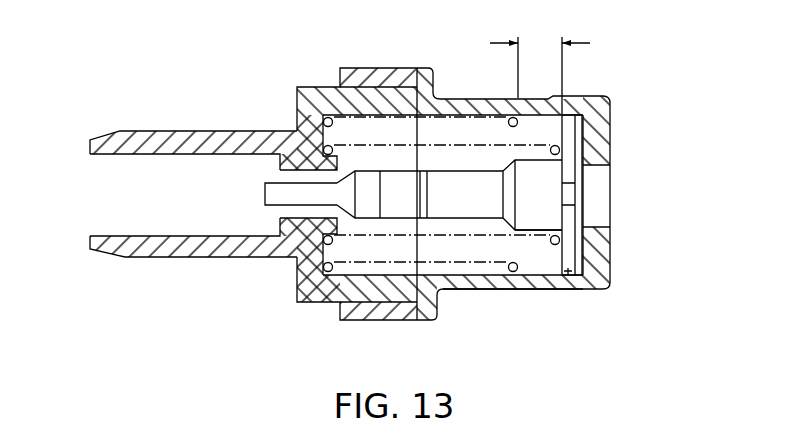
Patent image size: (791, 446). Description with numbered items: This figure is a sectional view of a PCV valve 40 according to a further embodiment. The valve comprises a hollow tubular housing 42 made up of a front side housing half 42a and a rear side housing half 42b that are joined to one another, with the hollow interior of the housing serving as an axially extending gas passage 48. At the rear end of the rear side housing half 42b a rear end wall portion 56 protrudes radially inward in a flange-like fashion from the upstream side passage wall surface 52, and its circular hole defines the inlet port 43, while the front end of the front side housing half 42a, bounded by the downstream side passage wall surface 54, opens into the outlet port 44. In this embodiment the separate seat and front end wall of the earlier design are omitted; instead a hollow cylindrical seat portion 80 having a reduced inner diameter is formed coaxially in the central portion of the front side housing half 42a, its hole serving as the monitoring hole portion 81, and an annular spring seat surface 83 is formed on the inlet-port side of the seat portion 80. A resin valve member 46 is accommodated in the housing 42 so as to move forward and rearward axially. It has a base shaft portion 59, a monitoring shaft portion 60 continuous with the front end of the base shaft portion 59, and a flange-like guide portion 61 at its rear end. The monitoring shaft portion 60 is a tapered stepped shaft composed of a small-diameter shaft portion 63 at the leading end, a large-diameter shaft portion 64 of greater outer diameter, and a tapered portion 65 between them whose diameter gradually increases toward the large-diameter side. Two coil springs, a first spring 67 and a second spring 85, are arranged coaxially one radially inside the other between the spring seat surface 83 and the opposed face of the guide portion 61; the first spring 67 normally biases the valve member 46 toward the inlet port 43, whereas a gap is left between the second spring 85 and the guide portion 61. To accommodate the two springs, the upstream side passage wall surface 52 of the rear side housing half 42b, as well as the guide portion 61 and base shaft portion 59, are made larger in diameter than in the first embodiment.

The PCV valve 40 is at (303, 63).
The housing 42 is at (409, 58).
The front side housing half 42a is at (176, 142).
The rear side housing half 42b is at (500, 291).
The inlet port 43 is at (600, 206).
The outlet port 44 is at (100, 208).
The valve member 46 is at (458, 160).
The gas passage 48 is at (462, 257).
The upstream side passage wall surface 52 is at (556, 276).
The downstream side passage wall surface 54 is at (158, 231).
The rear end wall portion 56 is at (602, 158).
The base shaft portion 59 is at (533, 241).
The monitoring shaft portion 60 is at (364, 228).
The guide portion 61 is at (572, 280).
The small-diameter shaft portion 63 is at (276, 195).
The large-diameter shaft portion 64 is at (398, 207).
The tapered portion 65 is at (286, 259).
The first spring 67 is at (297, 282).
The seat portion 80 is at (300, 160).
The monitoring hole portion 81 is at (280, 174).
The spring seat surface 83 is at (344, 108).
The second spring 85 is at (328, 270).